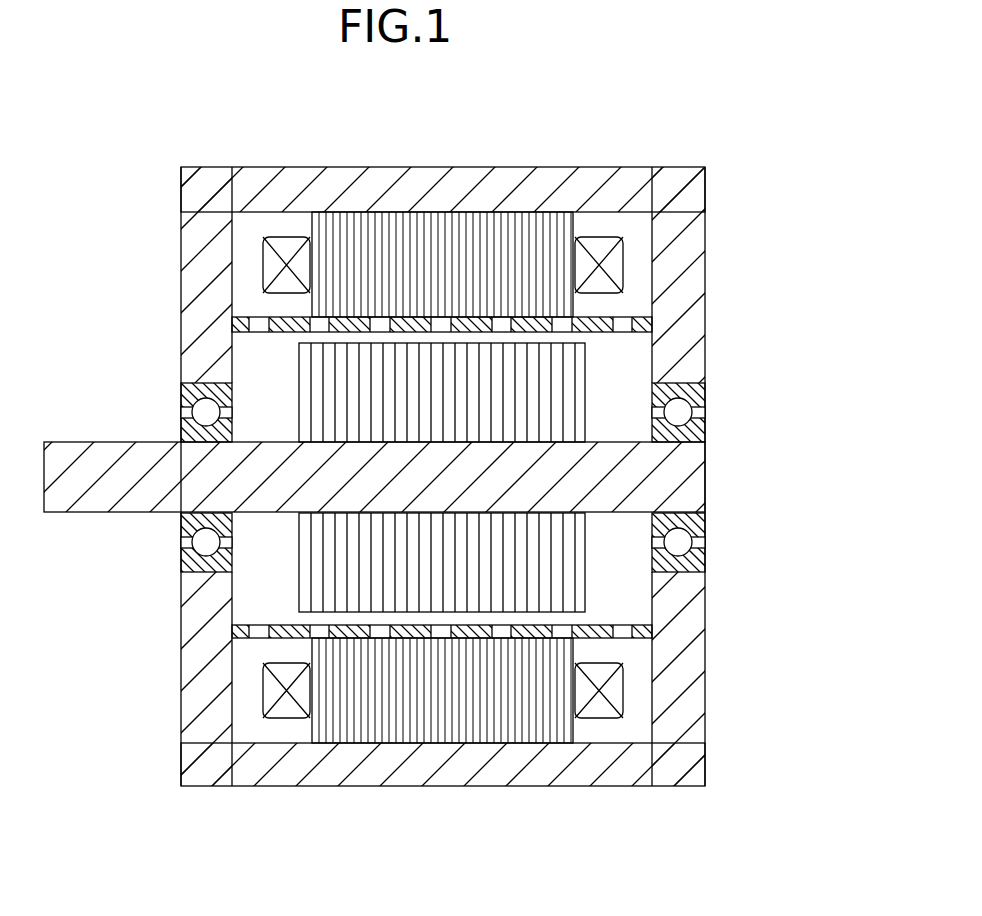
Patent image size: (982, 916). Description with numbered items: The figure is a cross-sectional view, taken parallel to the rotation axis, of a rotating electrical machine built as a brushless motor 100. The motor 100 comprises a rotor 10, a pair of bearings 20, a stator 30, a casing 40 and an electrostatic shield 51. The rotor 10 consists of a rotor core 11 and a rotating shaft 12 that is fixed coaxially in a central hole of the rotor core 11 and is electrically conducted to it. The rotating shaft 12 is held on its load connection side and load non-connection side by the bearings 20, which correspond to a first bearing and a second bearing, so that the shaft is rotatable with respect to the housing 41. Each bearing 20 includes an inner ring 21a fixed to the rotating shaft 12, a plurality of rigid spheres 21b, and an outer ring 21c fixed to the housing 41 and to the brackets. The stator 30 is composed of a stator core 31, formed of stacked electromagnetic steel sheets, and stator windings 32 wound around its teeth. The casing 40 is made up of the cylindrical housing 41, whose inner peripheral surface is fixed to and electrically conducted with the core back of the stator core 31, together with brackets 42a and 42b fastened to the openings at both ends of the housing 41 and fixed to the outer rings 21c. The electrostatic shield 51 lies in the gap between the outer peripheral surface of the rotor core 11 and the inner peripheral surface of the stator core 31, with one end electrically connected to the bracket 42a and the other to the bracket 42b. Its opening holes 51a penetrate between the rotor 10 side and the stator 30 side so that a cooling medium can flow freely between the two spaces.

The motor 100 is at (458, 136).
The rotor 10 is at (112, 335).
The rotor core 11 is at (313, 382).
The rotating shaft 12 is at (150, 460).
The bearings 20 is at (780, 363).
The inner ring 21a is at (695, 434).
The rigid spheres 21b is at (692, 414).
The outer ring 21c is at (695, 397).
The stator 30 is at (112, 107).
The stator core 31 is at (312, 231).
The stator windings 32 is at (270, 266).
The casing 40 is at (662, 870).
The housing 41 is at (445, 786).
The bracket 42a is at (210, 786).
The bracket 42b is at (675, 786).
The electrostatic shield 51 is at (290, 650).
The opening holes 51a is at (255, 640).